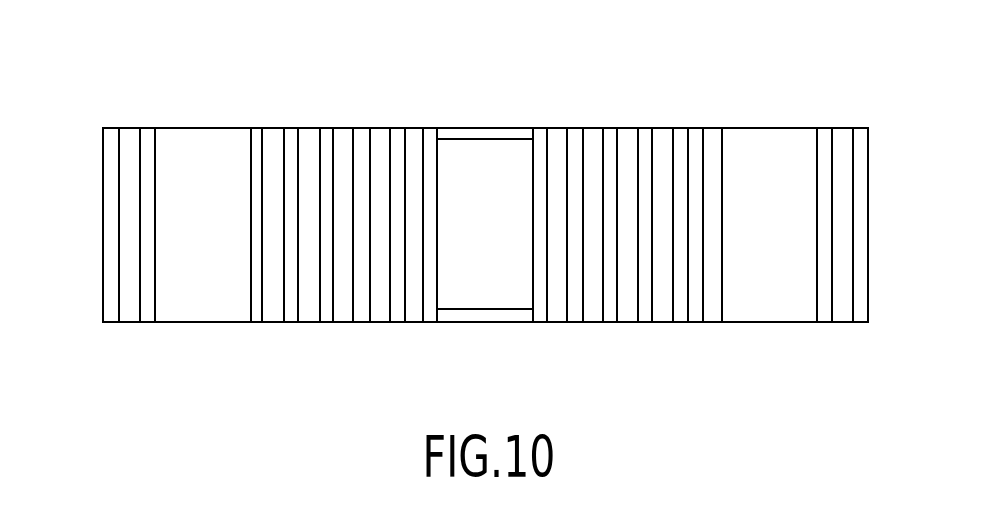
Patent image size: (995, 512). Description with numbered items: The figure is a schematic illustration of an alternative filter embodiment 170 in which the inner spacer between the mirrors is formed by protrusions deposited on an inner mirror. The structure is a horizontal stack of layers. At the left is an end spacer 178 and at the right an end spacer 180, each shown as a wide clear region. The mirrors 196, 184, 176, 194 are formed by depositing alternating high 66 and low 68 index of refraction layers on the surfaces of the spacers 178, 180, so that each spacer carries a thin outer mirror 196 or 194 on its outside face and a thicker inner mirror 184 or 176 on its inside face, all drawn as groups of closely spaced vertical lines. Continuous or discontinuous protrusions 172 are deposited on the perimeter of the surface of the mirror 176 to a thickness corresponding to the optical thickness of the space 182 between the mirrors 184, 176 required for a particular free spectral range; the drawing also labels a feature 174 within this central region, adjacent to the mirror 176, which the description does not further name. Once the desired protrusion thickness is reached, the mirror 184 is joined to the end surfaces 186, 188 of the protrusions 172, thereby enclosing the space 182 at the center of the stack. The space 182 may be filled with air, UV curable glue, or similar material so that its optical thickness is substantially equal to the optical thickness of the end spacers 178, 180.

The exemplary embodiment 170 is at (485, 163).
The high index of refraction layer 66 is at (472, 198).
The low index of refraction layer 68 is at (483, 197).
The protrusions 172 is at (485, 233).
The inner frame 174 is at (494, 225).
The mirror 176 is at (723, 333).
The end spacer 178 is at (203, 225).
The end spacer 180 is at (769, 225).
The space 182 is at (485, 224).
The mirror 184 is at (438, 357).
The end surface 186 is at (399, 200).
The end surface 188 is at (394, 243).
The mirror 194 is at (873, 333).
The mirror 196 is at (155, 338).